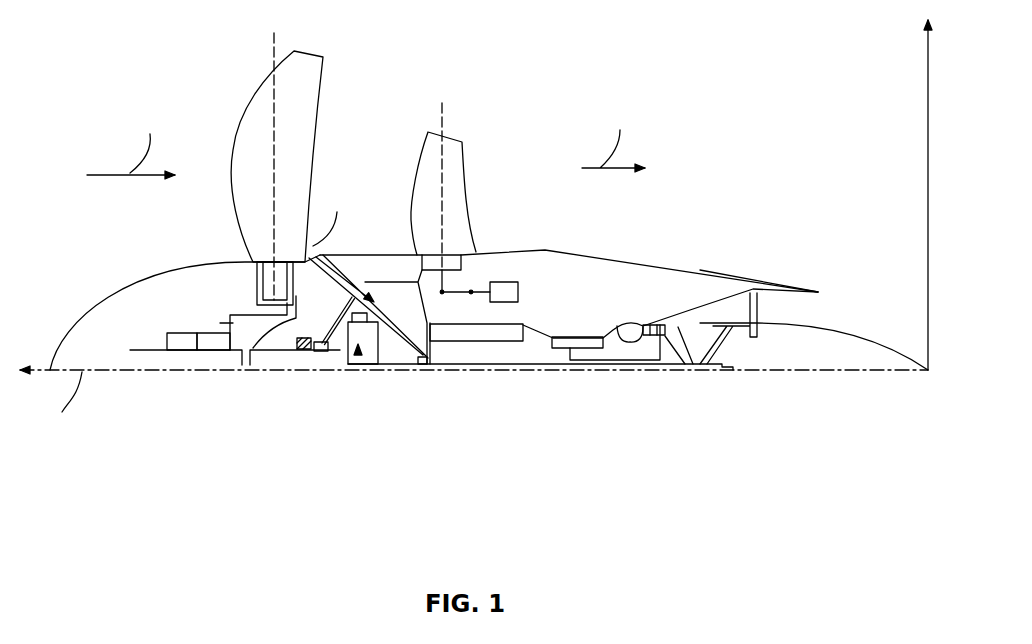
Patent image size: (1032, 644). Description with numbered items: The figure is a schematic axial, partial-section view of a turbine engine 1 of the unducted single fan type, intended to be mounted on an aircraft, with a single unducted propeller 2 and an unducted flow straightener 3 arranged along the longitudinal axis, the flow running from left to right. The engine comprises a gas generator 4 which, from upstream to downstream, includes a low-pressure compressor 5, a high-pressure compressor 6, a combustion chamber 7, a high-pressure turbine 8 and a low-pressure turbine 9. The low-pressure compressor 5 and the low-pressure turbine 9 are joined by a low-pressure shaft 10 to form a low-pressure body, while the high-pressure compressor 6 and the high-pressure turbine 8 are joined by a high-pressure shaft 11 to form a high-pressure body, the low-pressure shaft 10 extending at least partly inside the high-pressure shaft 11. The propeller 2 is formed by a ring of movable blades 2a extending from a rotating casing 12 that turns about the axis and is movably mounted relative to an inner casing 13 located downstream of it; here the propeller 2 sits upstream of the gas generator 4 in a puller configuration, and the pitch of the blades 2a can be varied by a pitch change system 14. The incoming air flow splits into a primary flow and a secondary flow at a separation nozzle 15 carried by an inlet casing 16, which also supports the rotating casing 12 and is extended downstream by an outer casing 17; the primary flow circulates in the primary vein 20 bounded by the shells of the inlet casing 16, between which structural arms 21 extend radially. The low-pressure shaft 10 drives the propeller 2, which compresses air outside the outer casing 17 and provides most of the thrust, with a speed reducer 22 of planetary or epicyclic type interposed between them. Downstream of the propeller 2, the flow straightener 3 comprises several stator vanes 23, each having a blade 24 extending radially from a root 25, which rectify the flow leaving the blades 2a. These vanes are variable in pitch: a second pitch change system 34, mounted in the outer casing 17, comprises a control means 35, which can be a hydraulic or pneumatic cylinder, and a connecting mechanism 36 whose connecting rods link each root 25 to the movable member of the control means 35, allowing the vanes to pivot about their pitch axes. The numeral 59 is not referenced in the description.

The turbine engine 1 is at (424, 80).
The unducted propeller 2 is at (249, 86).
The movable blades 2a is at (302, 93).
The flow straightener 3 is at (468, 190).
The gas generator 4 is at (674, 290).
The low-pressure compressor 5 is at (467, 342).
The high-pressure compressor 6 is at (572, 350).
The combustion chamber 7 is at (634, 345).
The high-pressure turbine 8 is at (695, 365).
The low-pressure turbine 9 is at (734, 313).
The low-pressure shaft 10 is at (540, 372).
The high-pressure shaft 11 is at (650, 345).
The rotating casing 12 is at (116, 276).
The inner casing 13 is at (333, 355).
The pitch change system 14 is at (229, 306).
The separation nozzle 15 is at (366, 260).
The inlet casing 16 is at (408, 303).
The outer casing 17 is at (734, 272).
The primary vein 20 is at (428, 360).
The structural arms 21 is at (307, 352).
The speed reducer 22 is at (362, 358).
The stator vanes 23 is at (476, 222).
The blade 24 is at (452, 163).
The root 25 is at (478, 268).
The second pitch change system 34 is at (526, 292).
The control means 35 is at (506, 292).
The connecting mechanism 36 is at (481, 295).
The support arm 59 is at (283, 352).